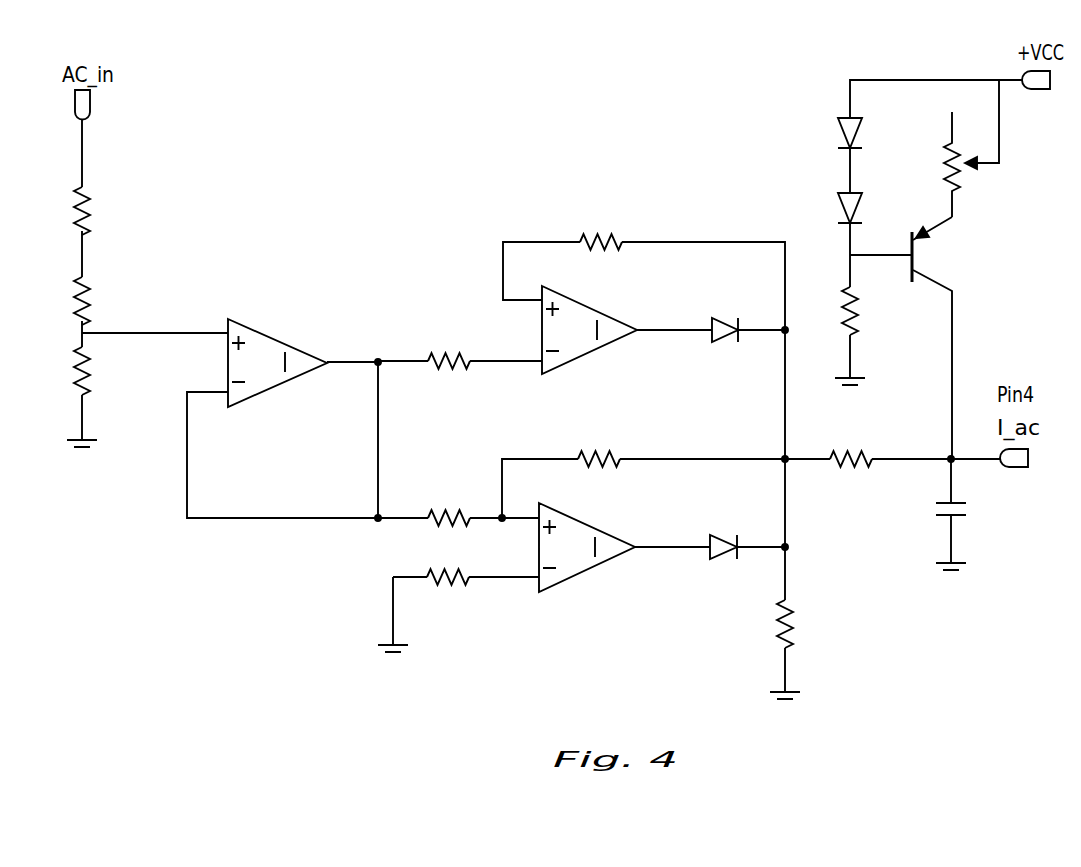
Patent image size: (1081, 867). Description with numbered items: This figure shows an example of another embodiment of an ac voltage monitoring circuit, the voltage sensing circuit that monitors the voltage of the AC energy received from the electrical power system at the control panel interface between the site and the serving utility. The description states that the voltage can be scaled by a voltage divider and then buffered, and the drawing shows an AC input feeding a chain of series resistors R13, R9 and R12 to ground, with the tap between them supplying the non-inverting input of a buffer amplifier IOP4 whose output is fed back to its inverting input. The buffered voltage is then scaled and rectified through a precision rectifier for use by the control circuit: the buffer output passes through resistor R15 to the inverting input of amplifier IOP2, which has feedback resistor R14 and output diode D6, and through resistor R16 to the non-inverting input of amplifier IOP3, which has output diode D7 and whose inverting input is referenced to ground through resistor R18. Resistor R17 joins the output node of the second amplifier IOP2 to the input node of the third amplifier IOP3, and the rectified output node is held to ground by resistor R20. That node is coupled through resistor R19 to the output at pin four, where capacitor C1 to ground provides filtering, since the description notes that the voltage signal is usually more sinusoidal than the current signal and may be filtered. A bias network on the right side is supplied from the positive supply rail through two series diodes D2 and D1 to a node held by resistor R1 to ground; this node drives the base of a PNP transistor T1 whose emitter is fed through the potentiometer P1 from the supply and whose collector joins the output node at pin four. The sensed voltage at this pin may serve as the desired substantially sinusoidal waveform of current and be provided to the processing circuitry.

The resistor R13 470K R13 is at (133, 211).
The resistor R9 470K R9 is at (126, 301).
The resistor R12 56K R12 is at (126, 371).
The operational amplifier IOP4 is at (277, 373).
The resistor R15 10K R15 is at (448, 344).
The resistor R16 10K R16 is at (448, 500).
The resistor R14 10K R14 is at (599, 225).
The operational amplifier IOP2 is at (589, 340).
The diode D6 1N4148 D6 is at (728, 312).
The resistor R17 10K R17 is at (599, 442).
The operational amplifier IOP3 is at (587, 557).
The resistor R18 5K R18 is at (447, 596).
The diode D7 1N4148 D7 is at (727, 529).
The resistor R20 10K R20 is at (829, 624).
The resistor R19 8.2K R19 is at (851, 440).
The capacitor C1 47n C1 is at (991, 511).
The diode D2 1N1183 D2 is at (800, 120).
The diode D1 1N1183 D1 is at (800, 194).
The resistor R1 10K R1 is at (886, 318).
The PNP transistor T1 is at (958, 338).
The potentiometer P1 1M P1 is at (993, 164).